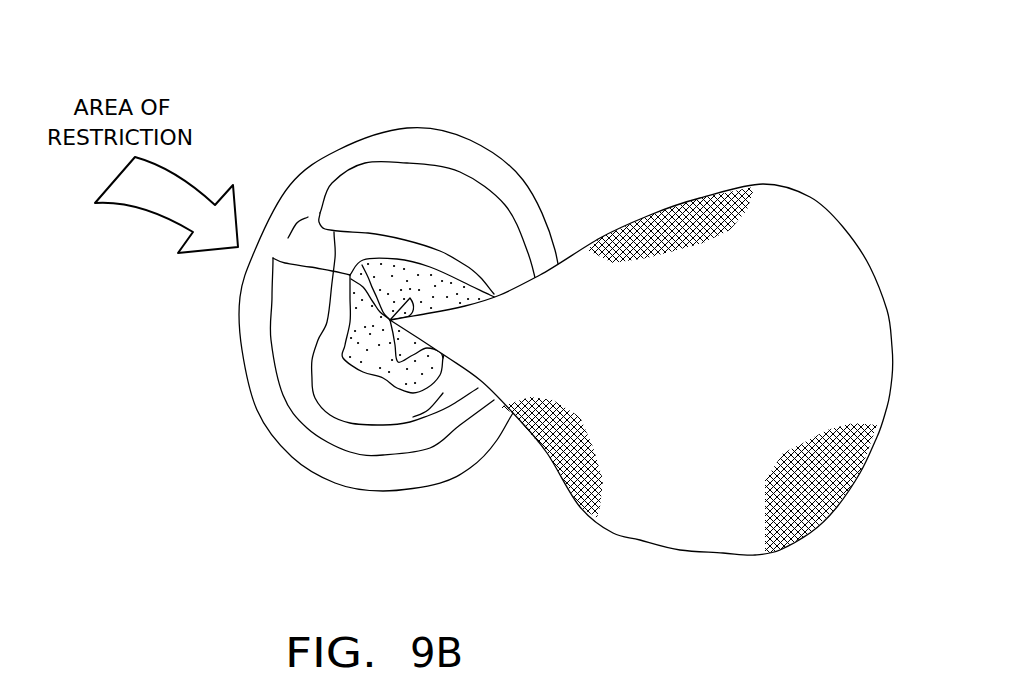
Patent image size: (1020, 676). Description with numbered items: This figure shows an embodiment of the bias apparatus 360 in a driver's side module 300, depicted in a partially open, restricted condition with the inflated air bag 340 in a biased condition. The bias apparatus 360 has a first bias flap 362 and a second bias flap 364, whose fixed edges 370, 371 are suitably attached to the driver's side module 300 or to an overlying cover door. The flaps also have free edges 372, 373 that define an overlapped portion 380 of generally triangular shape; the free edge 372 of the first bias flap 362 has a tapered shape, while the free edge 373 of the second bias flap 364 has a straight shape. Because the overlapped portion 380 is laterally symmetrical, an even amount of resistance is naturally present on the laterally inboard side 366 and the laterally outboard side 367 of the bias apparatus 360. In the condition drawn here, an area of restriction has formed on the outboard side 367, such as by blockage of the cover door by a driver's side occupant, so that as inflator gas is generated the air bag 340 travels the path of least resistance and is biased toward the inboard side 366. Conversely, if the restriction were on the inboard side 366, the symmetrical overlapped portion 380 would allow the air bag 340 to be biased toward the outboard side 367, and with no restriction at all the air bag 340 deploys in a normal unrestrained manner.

The driver's side module 300 is at (452, 294).
The air bag 340 is at (780, 220).
The bias apparatus 360 is at (347, 334).
The first bias flap 362 is at (402, 278).
The second bias flap 364 is at (377, 373).
The laterally inboard side 366 is at (442, 337).
The laterally outboard side 367 is at (335, 277).
The fixed edge 370 is at (383, 261).
The fixed edge 371 is at (390, 322).
The free edge 372 is at (390, 320).
The free edge 373 is at (388, 310).
The overlapped portion 380 is at (331, 329).